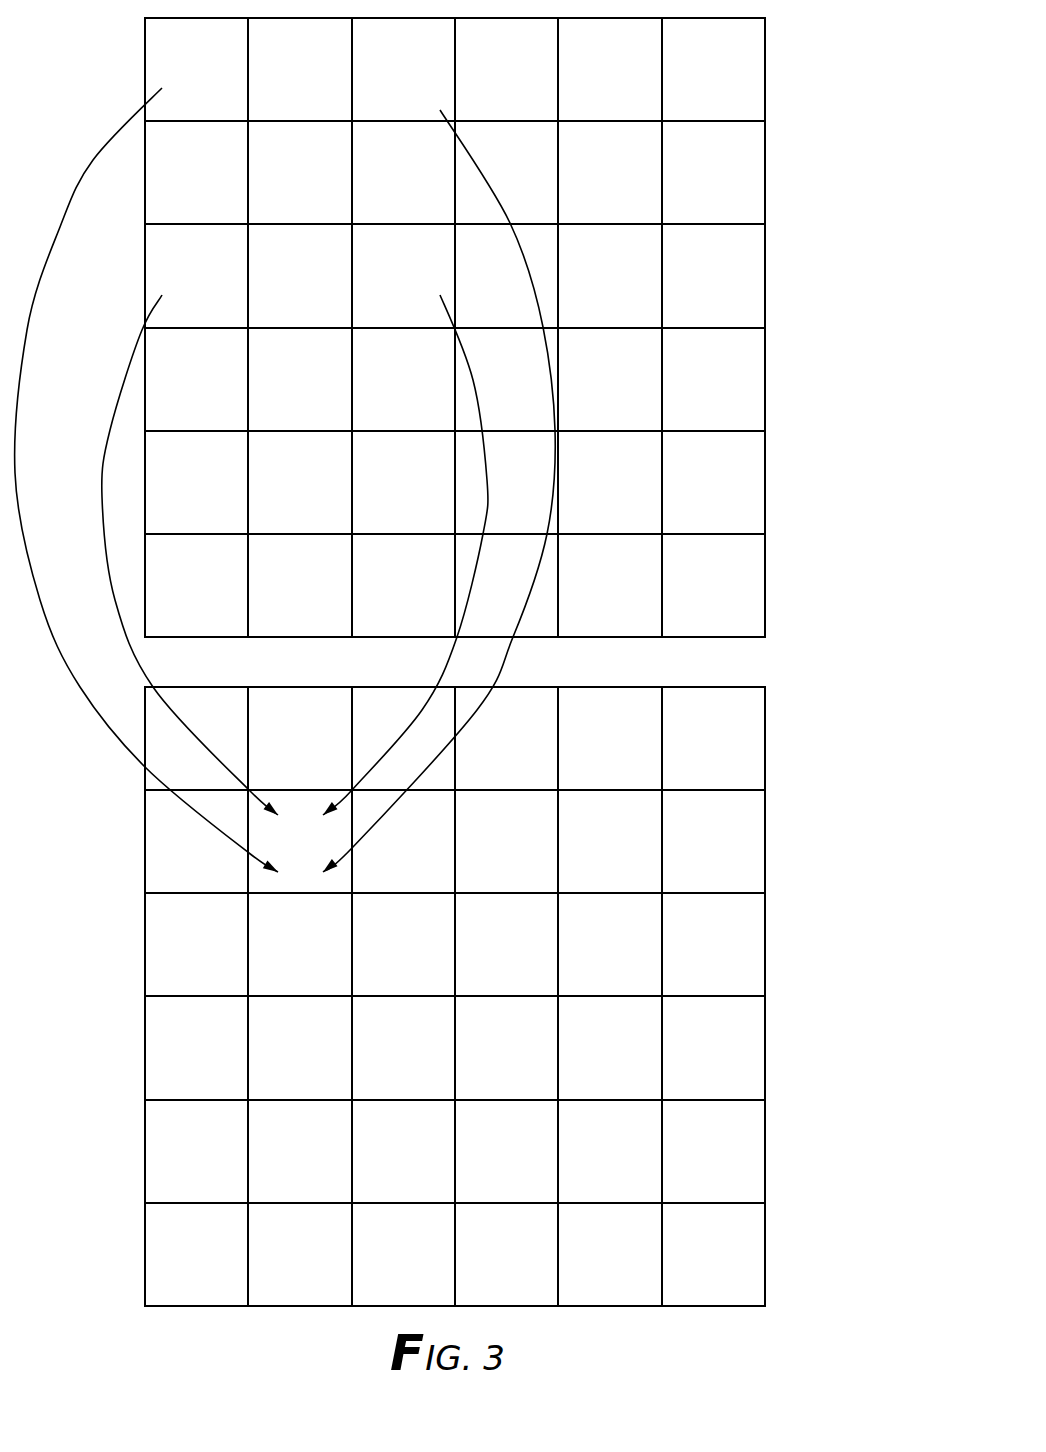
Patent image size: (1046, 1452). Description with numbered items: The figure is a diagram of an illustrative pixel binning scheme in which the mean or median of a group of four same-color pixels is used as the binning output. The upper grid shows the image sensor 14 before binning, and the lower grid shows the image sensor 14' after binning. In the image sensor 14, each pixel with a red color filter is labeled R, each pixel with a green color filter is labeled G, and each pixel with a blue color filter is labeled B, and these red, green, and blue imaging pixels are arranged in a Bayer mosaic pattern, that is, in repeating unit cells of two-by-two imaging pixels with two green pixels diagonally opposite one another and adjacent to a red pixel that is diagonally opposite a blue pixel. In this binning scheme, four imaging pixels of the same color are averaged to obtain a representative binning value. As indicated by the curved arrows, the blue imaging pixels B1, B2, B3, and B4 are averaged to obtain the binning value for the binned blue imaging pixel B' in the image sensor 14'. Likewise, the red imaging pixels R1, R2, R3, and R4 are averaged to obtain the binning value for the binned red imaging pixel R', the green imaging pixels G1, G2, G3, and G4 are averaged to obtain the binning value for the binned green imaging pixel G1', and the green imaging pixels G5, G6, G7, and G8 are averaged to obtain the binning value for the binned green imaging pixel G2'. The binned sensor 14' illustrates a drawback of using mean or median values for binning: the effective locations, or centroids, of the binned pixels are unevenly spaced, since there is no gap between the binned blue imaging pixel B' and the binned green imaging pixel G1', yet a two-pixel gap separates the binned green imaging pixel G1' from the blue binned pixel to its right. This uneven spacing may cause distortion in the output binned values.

The image sensor 14 is at (515, 318).
The image sensor after binning 14' is at (518, 988).
The blue imaging pixel B1 is at (196, 69).
The green imaging pixel G1 is at (300, 69).
The blue imaging pixel B2 is at (403, 69).
The green imaging pixel G2 is at (506, 69).
The green imaging pixel G5 is at (196, 172).
The red imaging pixel R1 is at (300, 172).
The green imaging pixel G6 is at (403, 172).
The red imaging pixel R2 is at (506, 172).
The blue imaging pixel B3 is at (196, 276).
The green imaging pixel G3 is at (300, 276).
The blue imaging pixel B4 is at (403, 276).
The green imaging pixel G4 is at (506, 276).
The green imaging pixel G7 is at (196, 379).
The red imaging pixel R3 is at (300, 379).
The green imaging pixel G8 is at (403, 379).
The red imaging pixel R4 is at (506, 379).
The binned blue imaging pixel B' is at (300, 841).
The binned green imaging pixel G1' is at (403, 841).
The binned green imaging pixel G2' is at (300, 944).
The binned red imaging pixel R' is at (403, 944).